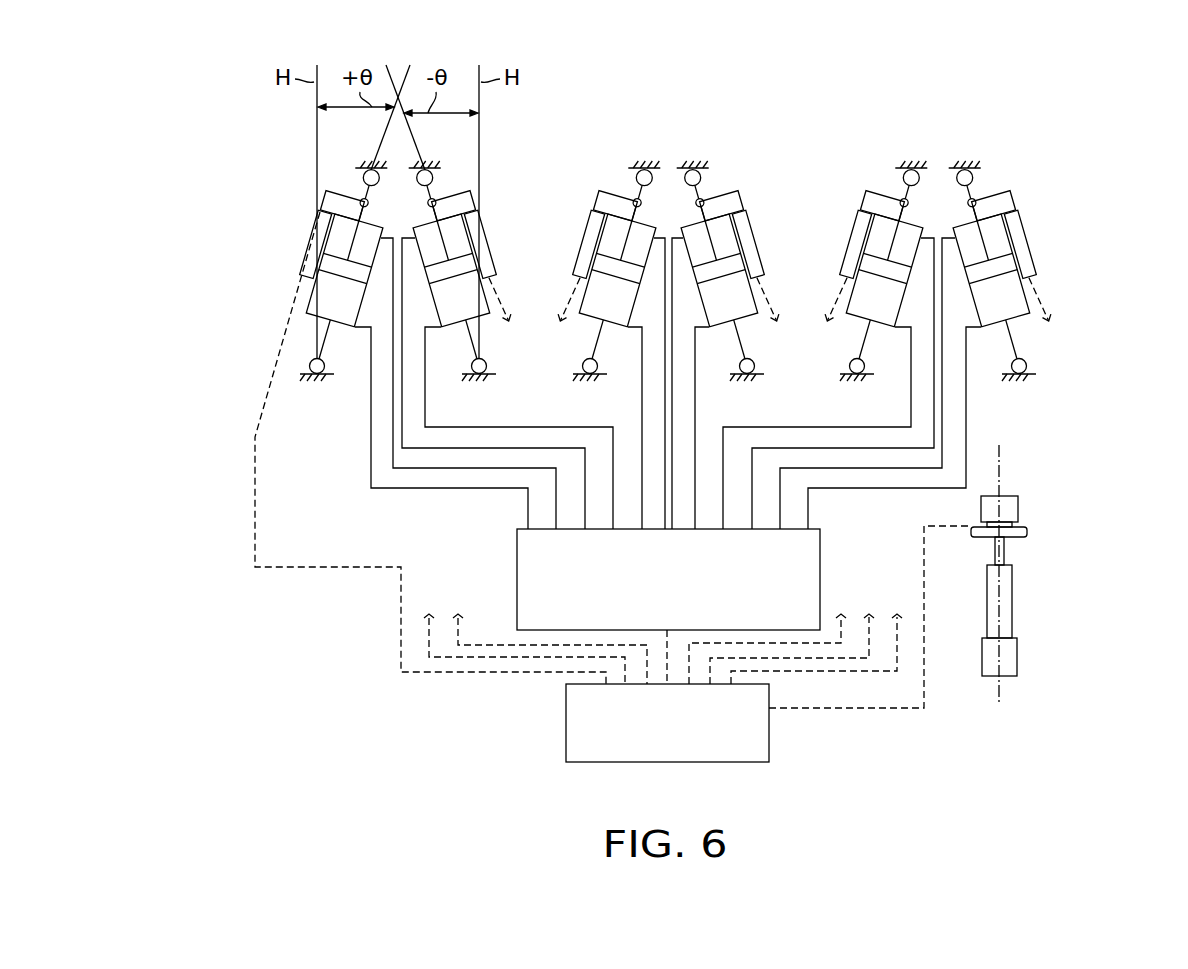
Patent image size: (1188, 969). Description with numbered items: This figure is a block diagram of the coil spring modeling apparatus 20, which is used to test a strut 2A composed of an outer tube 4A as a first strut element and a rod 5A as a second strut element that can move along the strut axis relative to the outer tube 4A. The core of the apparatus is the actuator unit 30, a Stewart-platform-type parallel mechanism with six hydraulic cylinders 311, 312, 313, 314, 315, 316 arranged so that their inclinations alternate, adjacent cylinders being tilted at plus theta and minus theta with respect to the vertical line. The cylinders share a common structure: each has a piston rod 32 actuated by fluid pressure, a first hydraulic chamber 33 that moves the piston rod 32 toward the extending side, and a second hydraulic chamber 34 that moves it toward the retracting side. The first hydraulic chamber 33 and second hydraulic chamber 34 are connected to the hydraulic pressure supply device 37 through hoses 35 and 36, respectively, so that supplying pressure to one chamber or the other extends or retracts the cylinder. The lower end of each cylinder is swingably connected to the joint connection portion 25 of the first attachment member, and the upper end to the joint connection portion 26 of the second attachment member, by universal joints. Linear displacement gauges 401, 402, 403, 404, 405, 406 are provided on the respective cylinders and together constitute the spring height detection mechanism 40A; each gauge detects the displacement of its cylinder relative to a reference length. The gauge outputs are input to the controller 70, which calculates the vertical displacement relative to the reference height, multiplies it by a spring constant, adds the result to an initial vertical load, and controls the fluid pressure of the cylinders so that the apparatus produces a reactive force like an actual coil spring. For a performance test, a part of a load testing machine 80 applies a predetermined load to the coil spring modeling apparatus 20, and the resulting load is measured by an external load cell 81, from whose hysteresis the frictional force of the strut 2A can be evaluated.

The coil spring modeling apparatus 20 is at (1091, 455).
The strut 2A is at (1032, 598).
The outer tube 4A is at (987, 614).
The rod 5A is at (995, 556).
The part of a load testing machine 80 is at (1005, 497).
The external load cell 81 is at (1005, 528).
The joint connection portion 25 is at (307, 364).
The joint connection portion 26 is at (364, 178).
The actuator unit 30 is at (1046, 216).
The piston rod 32 is at (320, 264).
The first hydraulic chamber 33 is at (312, 313).
The second hydraulic chamber 34 is at (336, 222).
The hose 35 is at (371, 428).
The hose 36 is at (393, 458).
The hydraulic pressure supply device 37 is at (516, 588).
The spring height detection mechanism 40A is at (540, 150).
The first displacement gauge 401 is at (310, 242).
The second displacement gauge 402 is at (473, 220).
The third displacement gauge 403 is at (593, 222).
The fourth displacement gauge 404 is at (743, 222).
The fifth displacement gauge 405 is at (863, 220).
The sixth displacement gauge 406 is at (1027, 233).
The first hydraulic cylinder 311 is at (307, 292).
The second hydraulic cylinder 312 is at (496, 298).
The third hydraulic cylinder 313 is at (578, 290).
The fourth hydraulic cylinder 314 is at (762, 297).
The fifth hydraulic cylinder 315 is at (842, 285).
The sixth hydraulic cylinder 316 is at (1027, 293).
The controller 70 is at (566, 734).